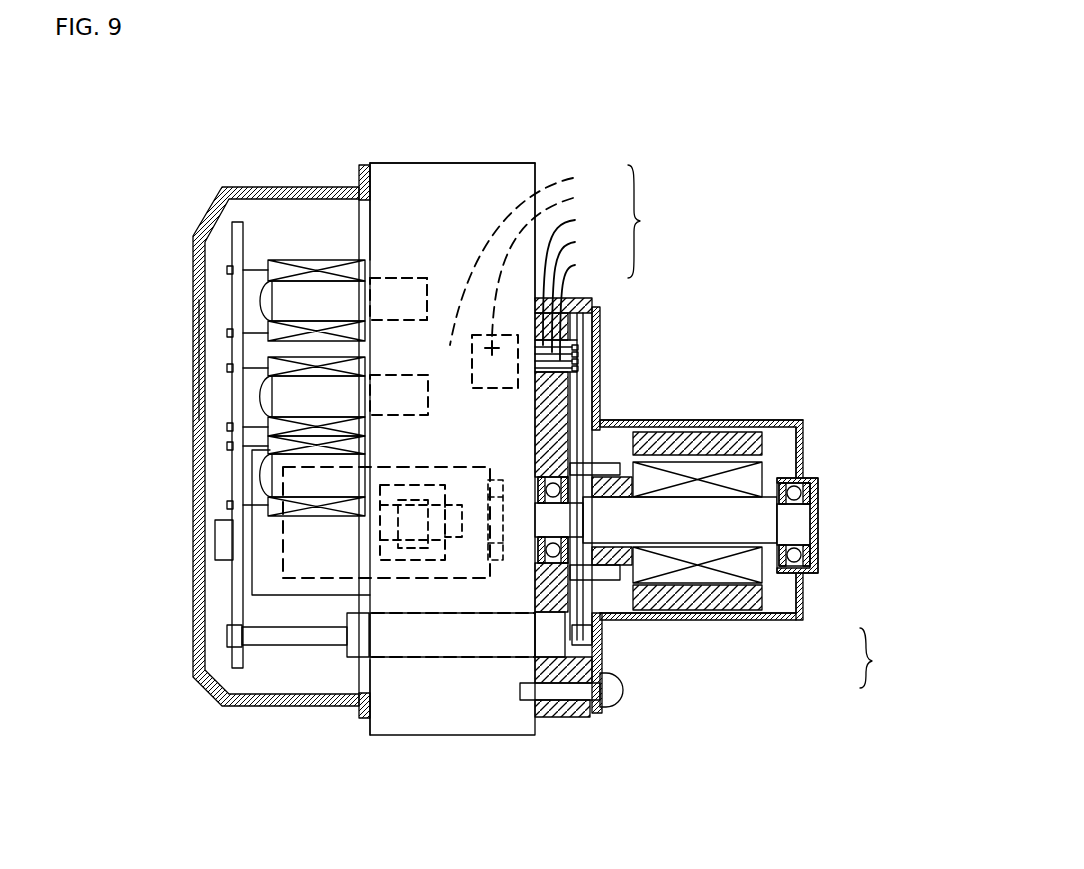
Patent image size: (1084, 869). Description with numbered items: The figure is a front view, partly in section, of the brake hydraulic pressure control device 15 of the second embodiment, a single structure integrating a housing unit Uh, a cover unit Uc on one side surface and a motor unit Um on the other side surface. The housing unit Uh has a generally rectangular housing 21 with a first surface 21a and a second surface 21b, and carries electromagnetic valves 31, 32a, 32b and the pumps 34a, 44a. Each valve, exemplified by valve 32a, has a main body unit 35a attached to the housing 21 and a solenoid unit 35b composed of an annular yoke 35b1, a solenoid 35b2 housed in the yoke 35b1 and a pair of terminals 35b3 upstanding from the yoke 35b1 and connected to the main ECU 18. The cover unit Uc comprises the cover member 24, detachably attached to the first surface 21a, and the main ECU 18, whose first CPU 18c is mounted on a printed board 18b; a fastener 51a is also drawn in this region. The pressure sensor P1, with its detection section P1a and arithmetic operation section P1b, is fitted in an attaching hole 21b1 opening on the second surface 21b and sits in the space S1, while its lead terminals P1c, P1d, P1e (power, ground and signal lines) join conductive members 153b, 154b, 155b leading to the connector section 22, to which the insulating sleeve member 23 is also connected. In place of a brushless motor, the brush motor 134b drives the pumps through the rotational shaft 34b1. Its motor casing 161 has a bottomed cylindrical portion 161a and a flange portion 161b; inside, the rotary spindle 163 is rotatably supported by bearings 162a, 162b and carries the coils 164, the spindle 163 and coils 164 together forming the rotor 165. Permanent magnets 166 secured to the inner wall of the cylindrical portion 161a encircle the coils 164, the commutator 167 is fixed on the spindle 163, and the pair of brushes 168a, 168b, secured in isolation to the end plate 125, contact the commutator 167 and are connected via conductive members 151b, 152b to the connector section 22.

The brake hydraulic pressure control device 15 is at (668, 162).
The cover unit Uc is at (204, 208).
The housing unit Uh is at (449, 156).
The motor unit Um is at (739, 288).
The main ECU 18 is at (229, 346).
The printed board 18b is at (233, 397).
The first CPU 18c is at (215, 531).
The housing 21 is at (413, 162).
The first surface 21a is at (364, 215).
The second surface 21b is at (534, 222).
The attaching hole 21b1 is at (477, 367).
The connector section 22 is at (358, 705).
The sleeve member 23 is at (435, 657).
The cover member 24 is at (198, 366).
The electromagnetic valve 31 is at (380, 453).
The electromagnetic valve 32a is at (426, 275).
The electromagnetic valve 32b is at (376, 371).
The pump 34a is at (380, 552).
The rotational shaft 34b1 is at (380, 523).
The main body unit 35a is at (392, 277).
The solenoid unit 35b is at (267, 318).
The annular yoke 35b1 is at (318, 253).
The solenoid 35b2 is at (306, 258).
The terminals 35b3 is at (228, 268).
The pump 44a is at (432, 562).
The fastening bolt 51a is at (288, 645).
The end plate 125 is at (566, 717).
The brush motor 134b is at (832, 519).
The conductive member 151b is at (605, 645).
The conductive member 152b is at (539, 482).
The conductive member 153b is at (596, 313).
The conductive member 154b is at (590, 342).
The conductive member 155b is at (577, 373).
The motor casing 161 is at (816, 417).
The bottomed cylindrical portion 161a is at (718, 421).
The flange portion 161b is at (618, 421).
The bearing 162a is at (808, 588).
The bearing 162b is at (527, 560).
The rotary spindle 163 is at (768, 540).
The coils 164 is at (762, 565).
The rotor 165 is at (890, 658).
The permanent magnets 166 is at (730, 620).
The commutator 167 is at (630, 620).
The brush 168a is at (608, 640).
The brush 168b is at (536, 448).
The pressure sensor P1 is at (652, 221).
The detection section P1a is at (535, 253).
The arithmetic operation section P1b is at (556, 261).
The lead terminal P1c is at (580, 276).
The lead terminal P1d is at (586, 291).
The lead terminal P1e is at (590, 306).
The space S1 is at (546, 332).